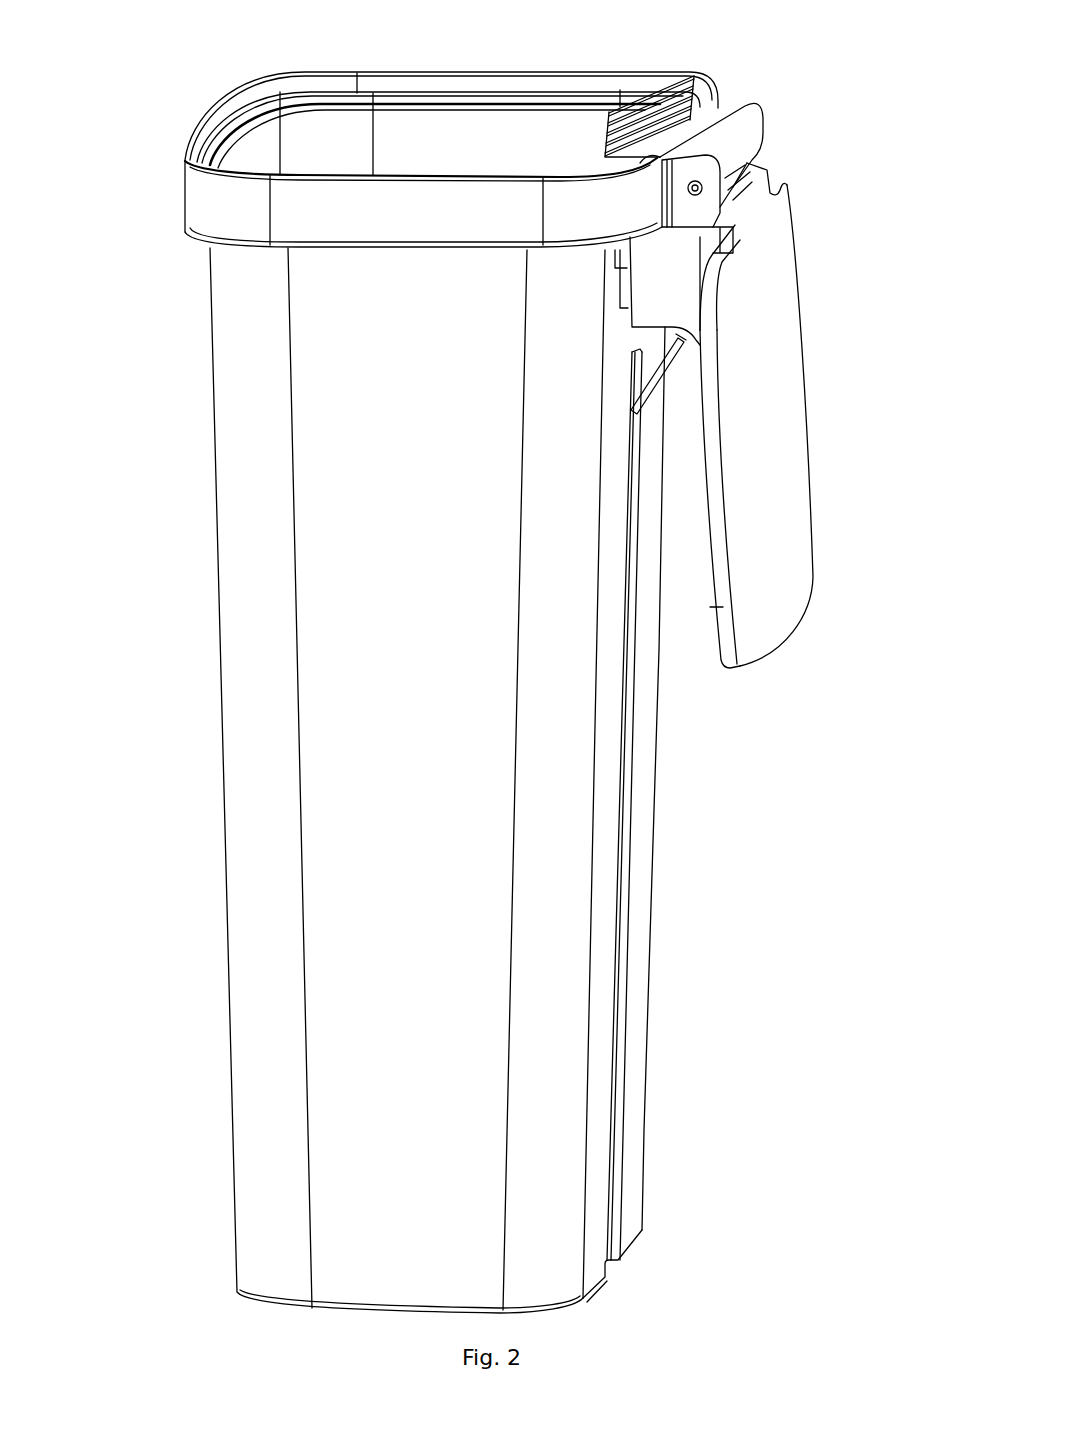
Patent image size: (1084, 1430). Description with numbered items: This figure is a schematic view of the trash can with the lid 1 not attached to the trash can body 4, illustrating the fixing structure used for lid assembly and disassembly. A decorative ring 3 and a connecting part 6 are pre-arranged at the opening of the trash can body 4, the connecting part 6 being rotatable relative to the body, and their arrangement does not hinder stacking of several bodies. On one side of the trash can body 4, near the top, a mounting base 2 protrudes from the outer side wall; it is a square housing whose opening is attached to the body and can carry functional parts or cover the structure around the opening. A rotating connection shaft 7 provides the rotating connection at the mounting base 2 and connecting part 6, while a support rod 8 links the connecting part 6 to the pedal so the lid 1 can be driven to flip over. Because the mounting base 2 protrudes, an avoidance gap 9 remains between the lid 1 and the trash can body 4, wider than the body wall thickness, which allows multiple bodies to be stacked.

The lid 1 is at (787, 295).
The mounting base 2 is at (668, 283).
The decorative ring 3 is at (218, 226).
The trash can body 4 is at (277, 639).
The connecting part 6 is at (690, 80).
The rotating connection shaft 7 is at (757, 158).
The support rod 8 is at (670, 375).
The avoidance gap 9 is at (675, 547).